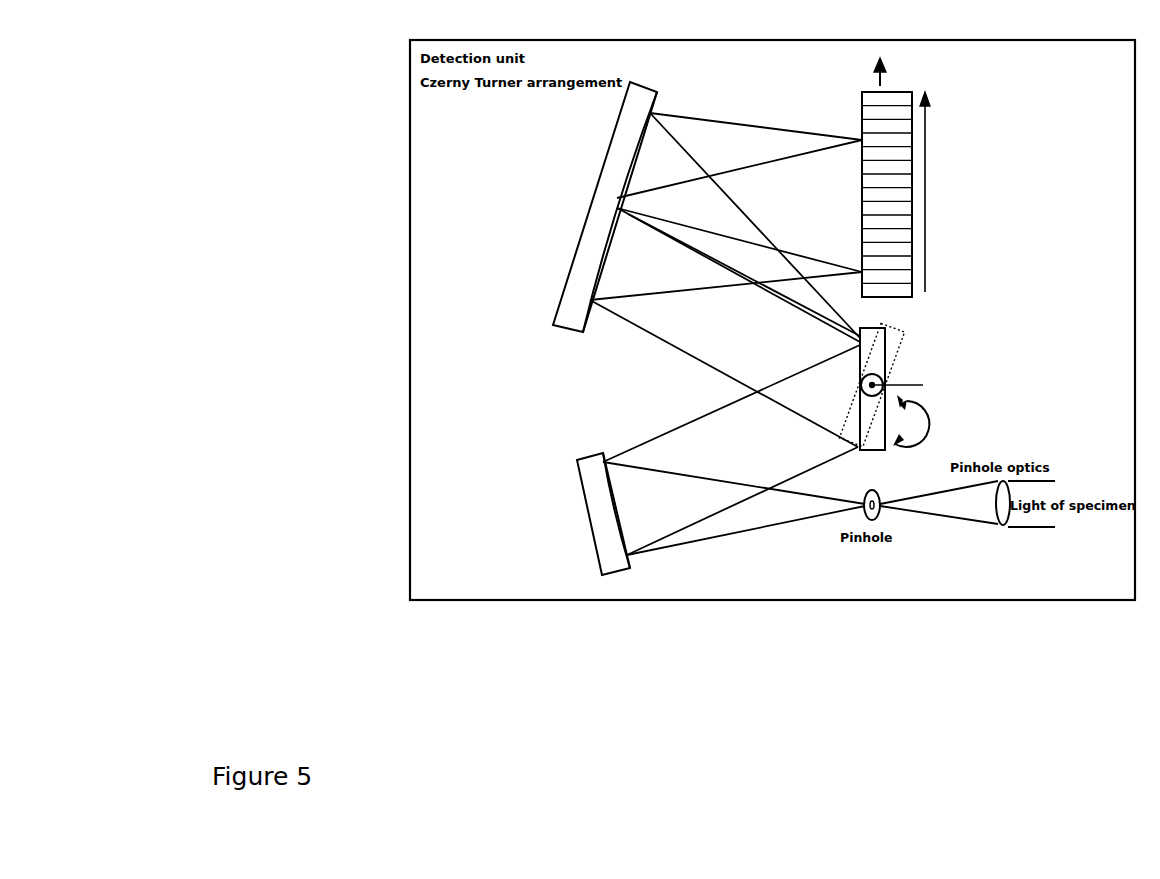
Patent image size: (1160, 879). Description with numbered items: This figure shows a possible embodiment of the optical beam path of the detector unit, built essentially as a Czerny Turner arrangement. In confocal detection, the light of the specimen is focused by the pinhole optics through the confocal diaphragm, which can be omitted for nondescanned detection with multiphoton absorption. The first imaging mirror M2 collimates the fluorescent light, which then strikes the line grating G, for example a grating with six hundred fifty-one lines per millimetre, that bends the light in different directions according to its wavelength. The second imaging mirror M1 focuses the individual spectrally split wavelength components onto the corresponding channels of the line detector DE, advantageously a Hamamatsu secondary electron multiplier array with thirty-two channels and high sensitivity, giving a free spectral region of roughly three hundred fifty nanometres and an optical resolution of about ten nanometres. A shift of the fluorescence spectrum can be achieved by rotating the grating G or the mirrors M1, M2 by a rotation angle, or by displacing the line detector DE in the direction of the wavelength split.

The second imaging mirror M1 is at (596, 207).
The first imaging mirror M2 is at (581, 514).
The line grating G is at (954, 386).
The line detector DE is at (977, 177).